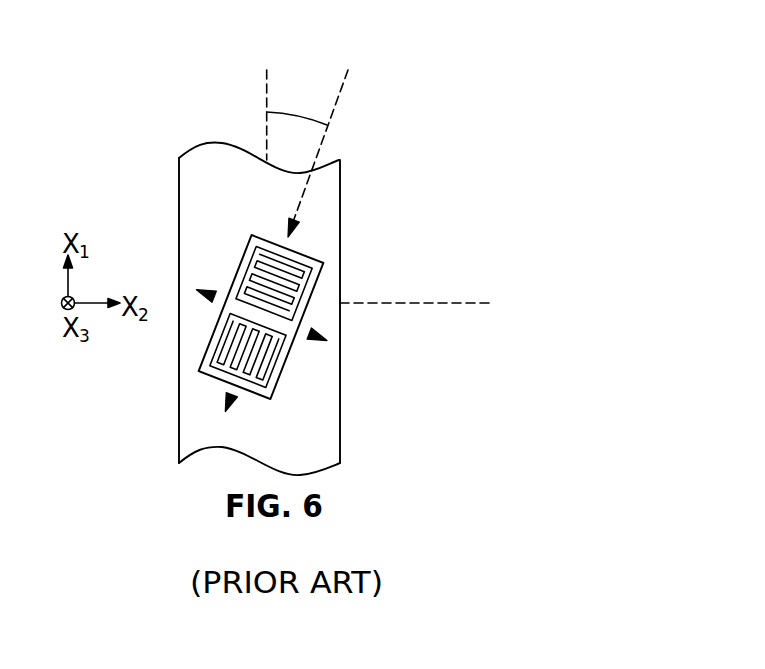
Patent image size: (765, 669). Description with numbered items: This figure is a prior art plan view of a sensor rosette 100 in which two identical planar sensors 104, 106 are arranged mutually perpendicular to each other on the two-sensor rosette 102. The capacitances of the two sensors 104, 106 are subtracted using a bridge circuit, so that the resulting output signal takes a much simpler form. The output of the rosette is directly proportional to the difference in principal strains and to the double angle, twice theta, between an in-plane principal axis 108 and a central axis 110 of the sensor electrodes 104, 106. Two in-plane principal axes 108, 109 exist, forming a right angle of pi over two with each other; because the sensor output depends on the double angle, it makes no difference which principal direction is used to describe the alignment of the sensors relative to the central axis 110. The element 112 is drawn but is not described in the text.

The prior art strain gauge arrangement 100 is at (504, 113).
The specimen strip / substrate 102 is at (250, 233).
The first strain gauge 104 is at (300, 300).
The second strain gauge 106 is at (278, 368).
The reference axis line 108 is at (266, 72).
The horizontal reference line 109 is at (490, 303).
The gauge axis line at angle theta 110 is at (349, 75).
The edge of specimen strip 112 is at (338, 240).